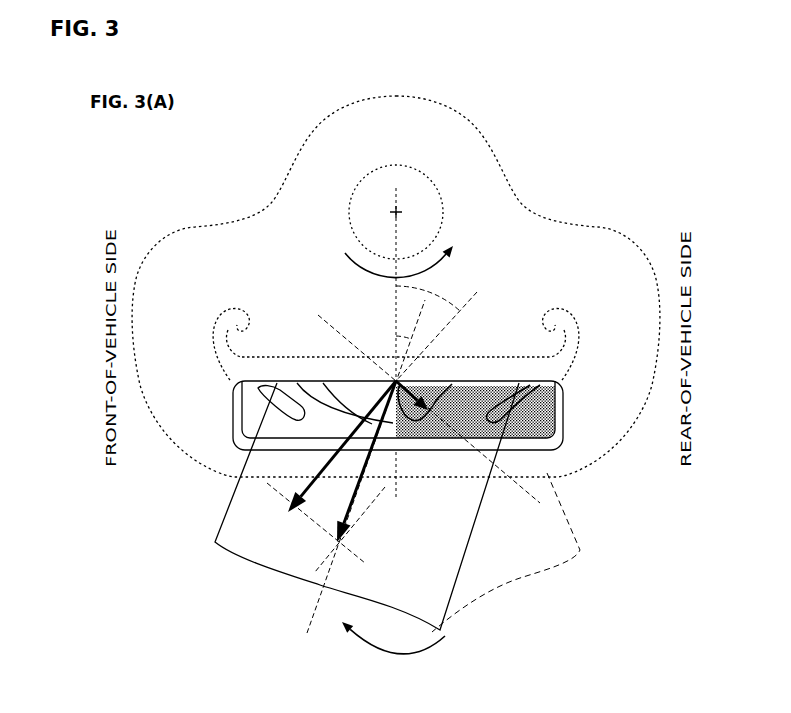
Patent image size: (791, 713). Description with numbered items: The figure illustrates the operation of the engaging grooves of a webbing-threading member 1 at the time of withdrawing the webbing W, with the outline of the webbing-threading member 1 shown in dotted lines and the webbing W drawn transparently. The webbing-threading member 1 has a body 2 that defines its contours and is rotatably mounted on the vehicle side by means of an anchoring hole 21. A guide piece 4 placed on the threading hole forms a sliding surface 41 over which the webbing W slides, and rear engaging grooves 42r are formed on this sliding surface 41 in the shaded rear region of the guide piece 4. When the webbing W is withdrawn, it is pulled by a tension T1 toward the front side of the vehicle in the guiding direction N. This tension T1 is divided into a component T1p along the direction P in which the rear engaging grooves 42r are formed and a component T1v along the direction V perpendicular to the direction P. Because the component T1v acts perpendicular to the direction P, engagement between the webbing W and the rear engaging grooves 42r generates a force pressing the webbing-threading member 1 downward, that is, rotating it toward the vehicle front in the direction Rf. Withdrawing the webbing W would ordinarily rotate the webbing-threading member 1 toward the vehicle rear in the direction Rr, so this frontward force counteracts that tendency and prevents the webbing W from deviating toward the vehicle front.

The webbing-threading member 1 is at (553, 126).
The body 2 is at (593, 226).
The anchoring hole 21 is at (397, 165).
The guide piece 4 is at (233, 410).
The sliding surface 41 is at (560, 409).
The rear engaging grooves 42r is at (452, 383).
The webbing W is at (225, 491).
The guiding direction N is at (305, 641).
The direction in which the engaging grooves are formed P is at (480, 286).
The direction perpendicular to direction P V is at (307, 307).
The rearward rotation direction Rr is at (388, 259).
The frontward rotation direction Rf is at (404, 638).
The tension T1 is at (366, 466).
The P-direction component of tension T1p is at (330, 459).
The V-direction component of tension T1v is at (424, 387).